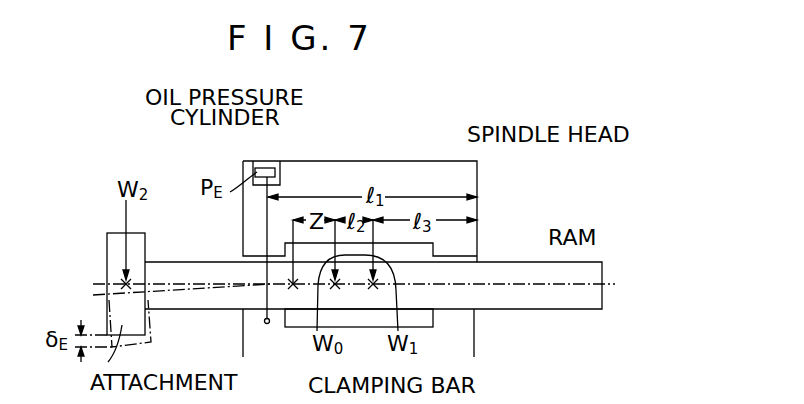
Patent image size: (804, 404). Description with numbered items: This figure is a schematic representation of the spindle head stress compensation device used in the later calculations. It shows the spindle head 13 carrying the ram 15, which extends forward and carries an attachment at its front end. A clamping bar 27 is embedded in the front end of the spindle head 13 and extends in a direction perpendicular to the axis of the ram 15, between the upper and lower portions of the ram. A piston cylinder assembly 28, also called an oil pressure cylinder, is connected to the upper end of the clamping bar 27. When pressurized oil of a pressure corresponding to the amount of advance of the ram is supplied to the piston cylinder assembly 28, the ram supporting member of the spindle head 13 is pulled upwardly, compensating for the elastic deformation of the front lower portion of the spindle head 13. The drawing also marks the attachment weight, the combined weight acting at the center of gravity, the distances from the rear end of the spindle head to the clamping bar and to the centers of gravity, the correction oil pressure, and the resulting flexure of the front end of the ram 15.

The spindle head 13 is at (433, 172).
The ram 15 is at (518, 272).
The clamping bar 27 is at (262, 300).
The piston cylinder assembly 28 is at (247, 163).